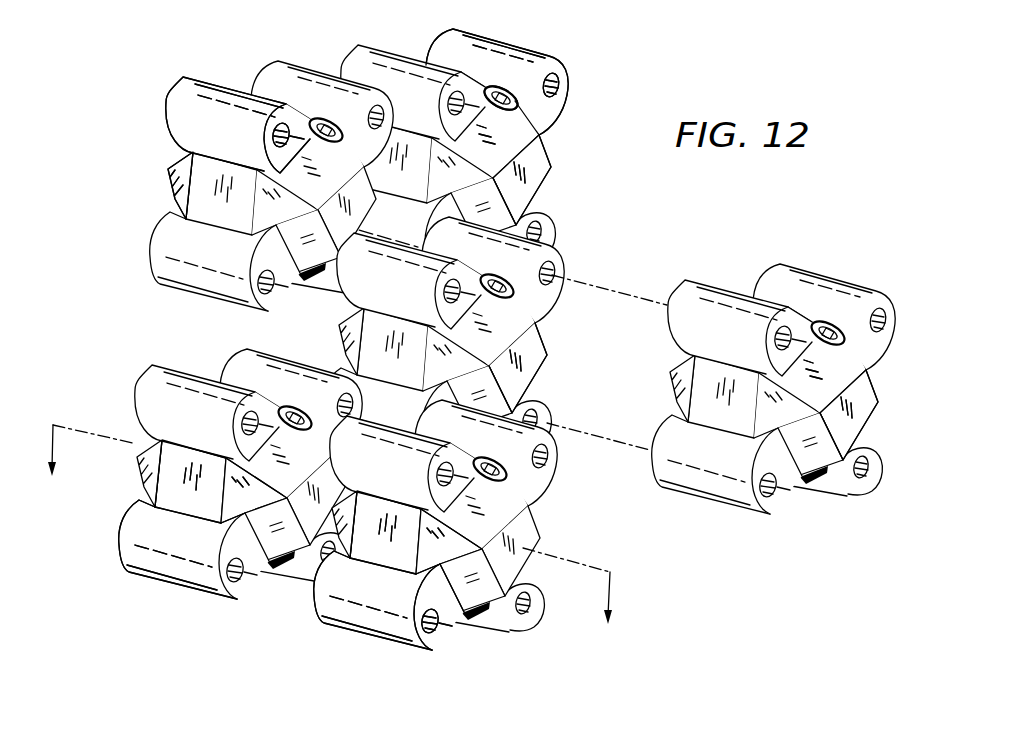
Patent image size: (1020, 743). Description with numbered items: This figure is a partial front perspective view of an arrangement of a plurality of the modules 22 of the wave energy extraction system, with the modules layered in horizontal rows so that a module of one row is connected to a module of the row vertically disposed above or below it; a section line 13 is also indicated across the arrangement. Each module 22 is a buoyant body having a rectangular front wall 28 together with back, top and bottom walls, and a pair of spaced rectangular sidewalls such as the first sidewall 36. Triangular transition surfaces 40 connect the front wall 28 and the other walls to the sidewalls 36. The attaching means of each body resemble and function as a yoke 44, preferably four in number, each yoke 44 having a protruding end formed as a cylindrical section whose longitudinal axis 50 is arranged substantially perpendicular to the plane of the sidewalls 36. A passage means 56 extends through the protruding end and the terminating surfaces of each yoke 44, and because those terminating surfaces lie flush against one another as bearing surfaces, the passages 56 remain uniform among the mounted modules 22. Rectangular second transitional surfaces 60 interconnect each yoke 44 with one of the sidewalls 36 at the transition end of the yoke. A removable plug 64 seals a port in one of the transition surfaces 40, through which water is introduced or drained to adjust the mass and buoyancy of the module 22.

The section line 13- 13 is at (327, 540).
The module 22 is at (798, 245).
The front wall 28 is at (203, 496).
The first sidewall 36 is at (535, 173).
The transition surfaces 40 is at (181, 182).
The yoke 44 is at (192, 93).
The longitudinal axis 50 is at (616, 290).
The passage means 56 is at (558, 90).
The second transitional surfaces 60 is at (513, 143).
The removable plug 64 is at (508, 95).